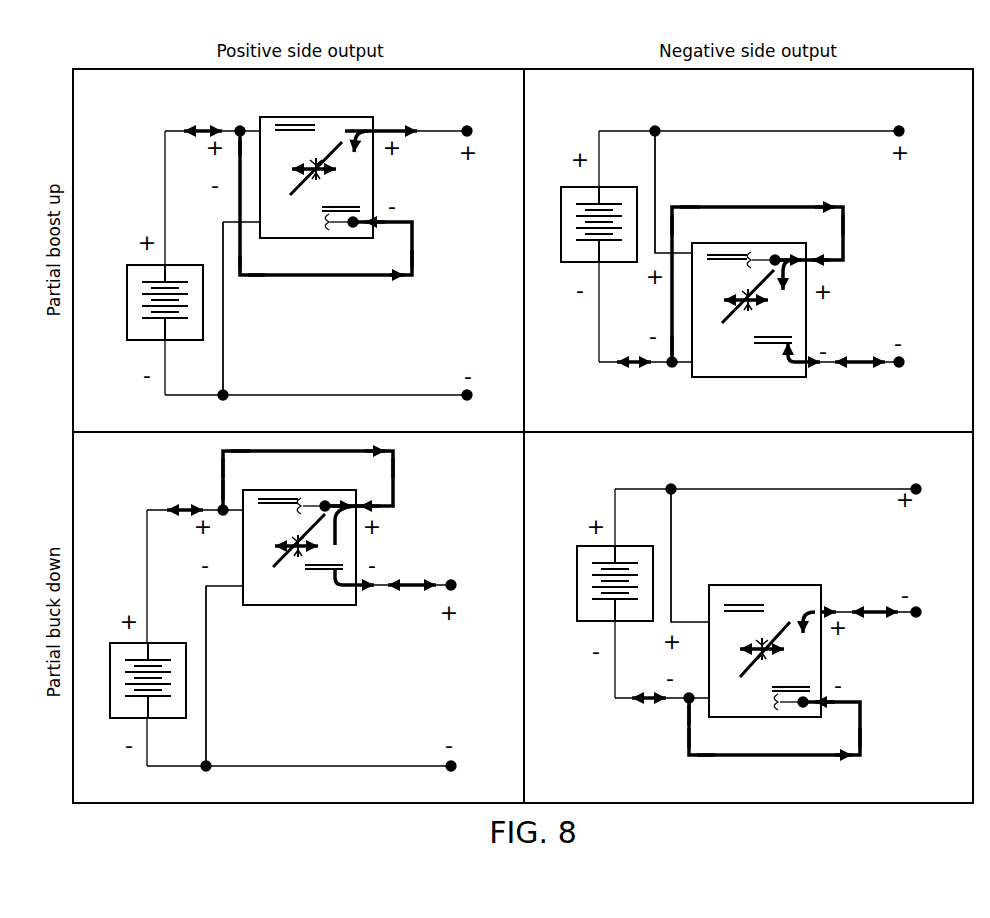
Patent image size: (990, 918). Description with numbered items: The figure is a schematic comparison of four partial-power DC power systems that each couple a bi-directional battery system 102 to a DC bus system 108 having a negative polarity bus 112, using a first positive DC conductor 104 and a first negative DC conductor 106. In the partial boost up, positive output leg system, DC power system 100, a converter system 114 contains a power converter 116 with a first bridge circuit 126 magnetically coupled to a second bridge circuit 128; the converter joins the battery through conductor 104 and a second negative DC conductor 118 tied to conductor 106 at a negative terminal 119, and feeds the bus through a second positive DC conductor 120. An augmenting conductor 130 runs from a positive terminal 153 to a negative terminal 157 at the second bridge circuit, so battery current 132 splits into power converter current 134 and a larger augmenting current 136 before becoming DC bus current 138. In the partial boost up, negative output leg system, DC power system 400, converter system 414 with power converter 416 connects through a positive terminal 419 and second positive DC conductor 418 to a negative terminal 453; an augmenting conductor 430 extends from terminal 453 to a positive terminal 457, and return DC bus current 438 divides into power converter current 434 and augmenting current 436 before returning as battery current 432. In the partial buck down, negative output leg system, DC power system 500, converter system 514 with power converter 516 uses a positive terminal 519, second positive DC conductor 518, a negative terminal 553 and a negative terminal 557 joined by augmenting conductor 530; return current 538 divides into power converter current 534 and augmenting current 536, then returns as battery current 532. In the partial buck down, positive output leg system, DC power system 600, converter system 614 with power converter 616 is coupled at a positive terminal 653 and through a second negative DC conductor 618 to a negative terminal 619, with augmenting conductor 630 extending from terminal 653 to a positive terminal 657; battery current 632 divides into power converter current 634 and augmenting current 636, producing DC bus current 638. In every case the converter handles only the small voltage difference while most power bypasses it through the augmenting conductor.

The DC power system 100 is at (146, 102).
The battery system 102 is at (127, 302).
The first positive DC conductor 104 is at (164, 176).
The first negative DC conductor 106 is at (182, 397).
The DC bus system 108 is at (483, 220).
The negative polarity bus 112 is at (899, 370).
The converter system 114 is at (318, 272).
The power converter 116 is at (300, 117).
The second negative DC conductor 118 is at (225, 332).
The negative terminal 119 is at (223, 399).
The second positive DC conductor 120 is at (460, 128).
The first bridge circuit 126 is at (302, 160).
The second bridge circuit 128 is at (368, 197).
The augmenting conductor 130 is at (326, 280).
The battery current 132 is at (204, 128).
The power converter current 134 is at (292, 192).
The augmenting current 136 is at (378, 280).
The DC bus current 138 is at (388, 128).
The positive terminal 153 is at (240, 126).
The negative terminal 157 is at (353, 229).
The DC power system 400 is at (596, 103).
The converter system 414 is at (738, 240).
The power converter 416 is at (722, 378).
The second positive DC conductor 418 is at (657, 160).
The positive terminal 419 is at (656, 126).
The augmenting conductor 430 is at (730, 205).
The battery current 432 is at (633, 366).
The power converter current 434 is at (724, 318).
The augmenting current 436 is at (820, 205).
The return DC bus current 438 is at (860, 368).
The negative terminal 453 is at (672, 368).
The positive terminal 457 is at (778, 254).
The DC power system 500 is at (613, 466).
The converter system 514 is at (768, 754).
The power converter 516 is at (765, 584).
The second positive DC conductor 518 is at (673, 522).
The positive terminal 519 is at (672, 485).
The augmenting conductor 530 is at (775, 758).
The battery current 532 is at (650, 703).
The power converter current 534 is at (742, 663).
The augmenting current 536 is at (828, 758).
The return DC bus current 538 is at (868, 608).
The negative terminal 553 is at (689, 692).
The negative terminal 557 is at (804, 708).
The DC power system 600 is at (146, 472).
The converter system 614 is at (302, 486).
The power converter 616 is at (333, 607).
The second negative DC conductor 618 is at (207, 685).
The negative terminal 619 is at (208, 770).
The augmenting conductor 630 is at (397, 481).
The battery current 632 is at (185, 506).
The power converter current 634 is at (275, 563).
The augmenting current 636 is at (397, 506).
The DC bus current 638 is at (410, 590).
The positive terminal 653 is at (222, 516).
The positive terminal 657 is at (326, 500).